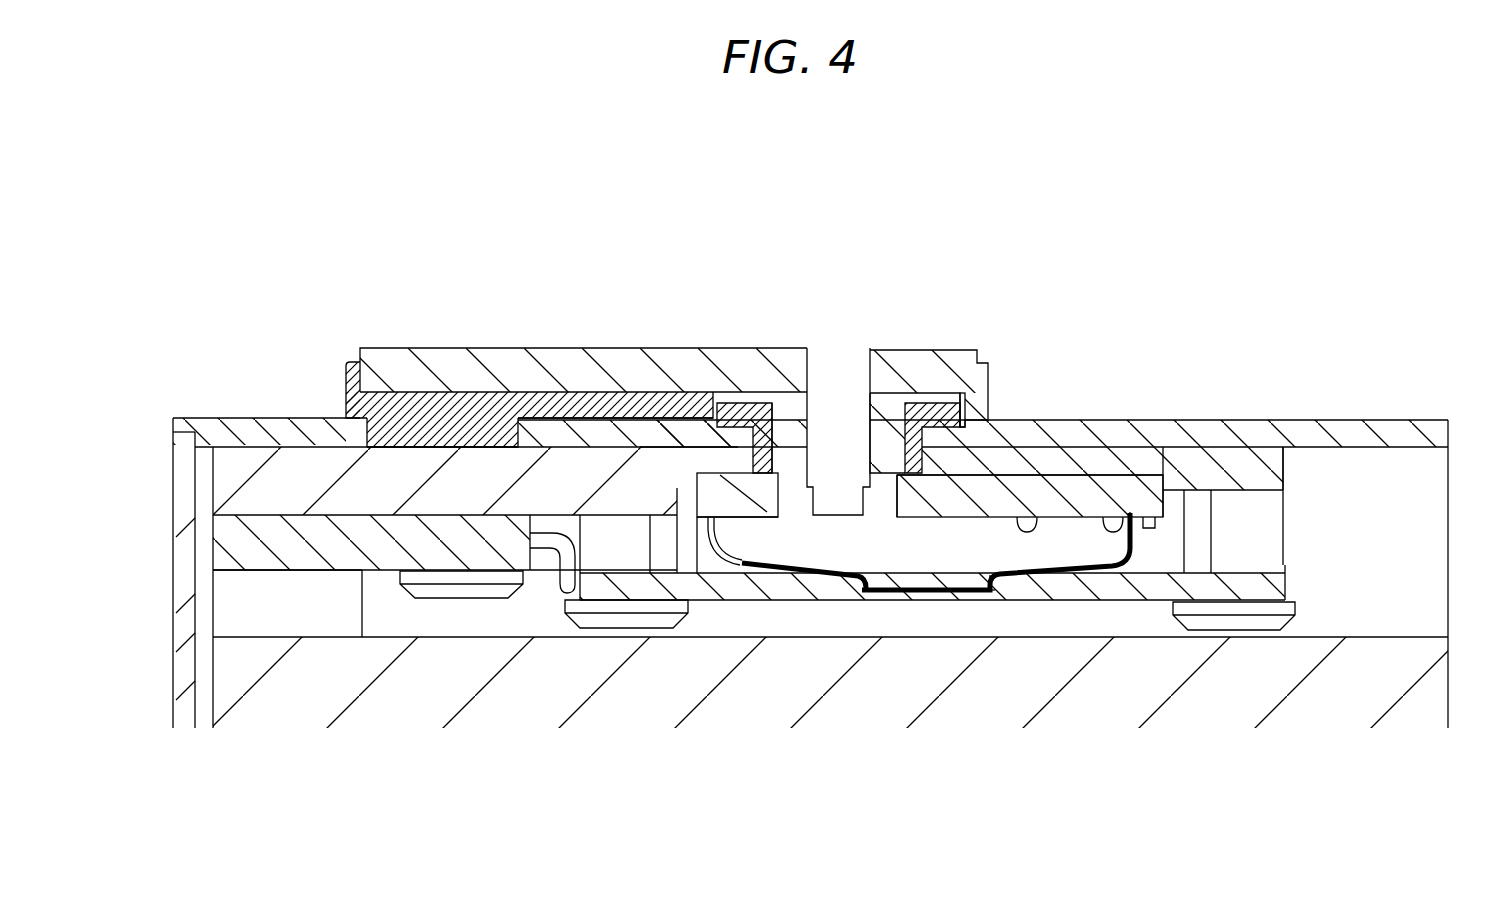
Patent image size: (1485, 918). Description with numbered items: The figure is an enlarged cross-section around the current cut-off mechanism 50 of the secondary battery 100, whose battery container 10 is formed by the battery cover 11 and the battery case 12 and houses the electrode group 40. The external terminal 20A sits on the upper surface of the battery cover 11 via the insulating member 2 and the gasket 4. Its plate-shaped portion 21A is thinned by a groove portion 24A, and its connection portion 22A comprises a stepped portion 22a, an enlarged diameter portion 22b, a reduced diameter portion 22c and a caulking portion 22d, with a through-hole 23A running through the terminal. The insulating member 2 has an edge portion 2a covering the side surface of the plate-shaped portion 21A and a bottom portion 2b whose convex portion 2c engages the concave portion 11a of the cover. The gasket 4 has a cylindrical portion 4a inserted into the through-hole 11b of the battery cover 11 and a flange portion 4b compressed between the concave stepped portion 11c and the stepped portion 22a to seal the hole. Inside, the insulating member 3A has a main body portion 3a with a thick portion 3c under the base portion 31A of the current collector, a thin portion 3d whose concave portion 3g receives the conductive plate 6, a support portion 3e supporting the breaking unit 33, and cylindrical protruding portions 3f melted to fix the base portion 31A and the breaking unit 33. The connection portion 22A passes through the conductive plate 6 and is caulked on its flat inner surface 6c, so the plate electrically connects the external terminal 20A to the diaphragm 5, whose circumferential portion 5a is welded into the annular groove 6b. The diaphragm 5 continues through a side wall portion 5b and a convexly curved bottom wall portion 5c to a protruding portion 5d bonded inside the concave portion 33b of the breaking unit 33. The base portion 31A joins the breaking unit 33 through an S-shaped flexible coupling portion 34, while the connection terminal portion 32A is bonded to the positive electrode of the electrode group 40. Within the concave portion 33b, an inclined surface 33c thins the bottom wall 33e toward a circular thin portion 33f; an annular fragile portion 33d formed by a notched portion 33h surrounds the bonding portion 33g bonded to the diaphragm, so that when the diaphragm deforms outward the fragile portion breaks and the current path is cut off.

The secondary battery 100 is at (1192, 226).
The battery container 10 is at (1415, 383).
The battery case 12 is at (180, 472).
The electrode group 40 is at (1384, 657).
The current cut-off mechanism 50 is at (1300, 507).
The insulating member 3A is at (1300, 465).
The battery cover 11 is at (1312, 440).
The thick portion 3c is at (272, 490).
The concave portion 3g is at (1080, 473).
The thin portion 3d is at (1192, 472).
The support portion 3e is at (1286, 527).
The conductive plate 6 is at (1060, 497).
The surface 6c is at (1033, 516).
The annular groove 6b is at (1107, 513).
The notched portion 33h is at (1022, 558).
The concave portion 33b is at (1112, 552).
The insulating member 2 is at (346, 392).
The external terminal 20A is at (375, 310).
The edge portion 2a is at (355, 362).
The plate-shaped portion 21A is at (575, 405).
The bottom portion 2b is at (520, 412).
The convex portion 2c is at (455, 440).
The concave portion 11a is at (408, 430).
The groove portion 24A is at (655, 372).
The enlarged diameter portion 22b is at (768, 427).
The reduced diameter portion 22c is at (748, 465).
The stepped portion 22a is at (712, 403).
The caulking portion 22d is at (775, 555).
The through-hole 23A is at (835, 362).
The through-hole 11b is at (893, 430).
The stepped portion 11c is at (928, 400).
The gasket 4 is at (1047, 294).
The cylindrical portion 4a is at (925, 402).
The flange portion 4b is at (973, 408).
The base portion 31A is at (240, 540).
The connection terminal portion 32A is at (240, 600).
The main body portion 3a is at (298, 572).
The protruding portion 3f is at (457, 590).
The coupling portion 34 is at (550, 560).
The diaphragm 5 is at (1165, 545).
The connection portion 22A is at (840, 568).
The circumferential portion 5a is at (1157, 547).
The side wall portion 5b is at (708, 560).
The bottom wall portion 5c is at (1022, 593).
The protruding portion 5d is at (927, 595).
The breaking unit 33 is at (1150, 551).
The inclined surface 33c is at (1053, 593).
The fragile portion 33d is at (895, 592).
The bottom wall 33e is at (1085, 593).
The thin portion 33f is at (990, 593).
The bonding portion 33g is at (952, 597).